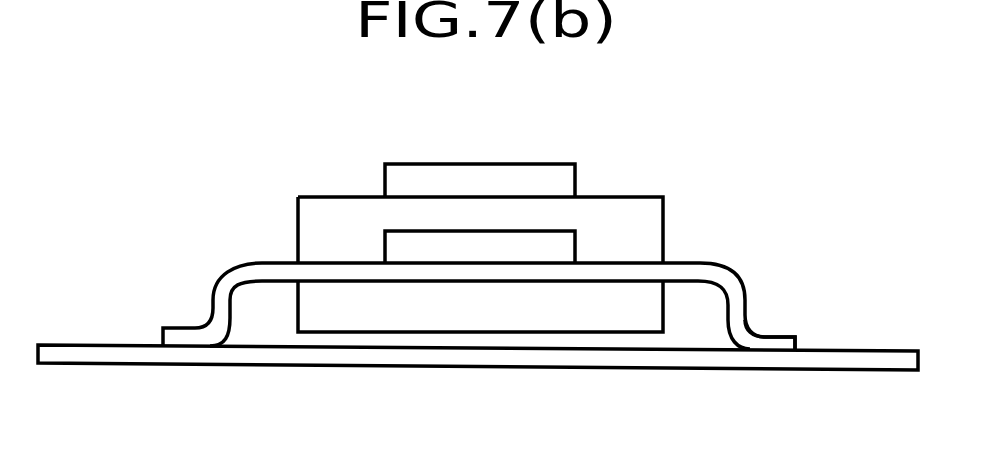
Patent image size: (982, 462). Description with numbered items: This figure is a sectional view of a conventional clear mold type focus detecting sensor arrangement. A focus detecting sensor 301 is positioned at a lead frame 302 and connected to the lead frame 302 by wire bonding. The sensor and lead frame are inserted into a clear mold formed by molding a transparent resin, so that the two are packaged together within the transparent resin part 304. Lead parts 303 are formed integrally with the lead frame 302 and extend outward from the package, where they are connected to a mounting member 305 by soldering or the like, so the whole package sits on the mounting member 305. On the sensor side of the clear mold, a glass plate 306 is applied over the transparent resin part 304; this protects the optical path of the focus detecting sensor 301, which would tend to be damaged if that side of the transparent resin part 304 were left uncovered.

The focus detecting sensor 301 is at (395, 240).
The lead frame 302 is at (495, 276).
The lead parts 303 is at (775, 341).
The transparent resin part 304 is at (633, 208).
The mounting member 305 is at (692, 362).
The glass plate 306 is at (533, 165).